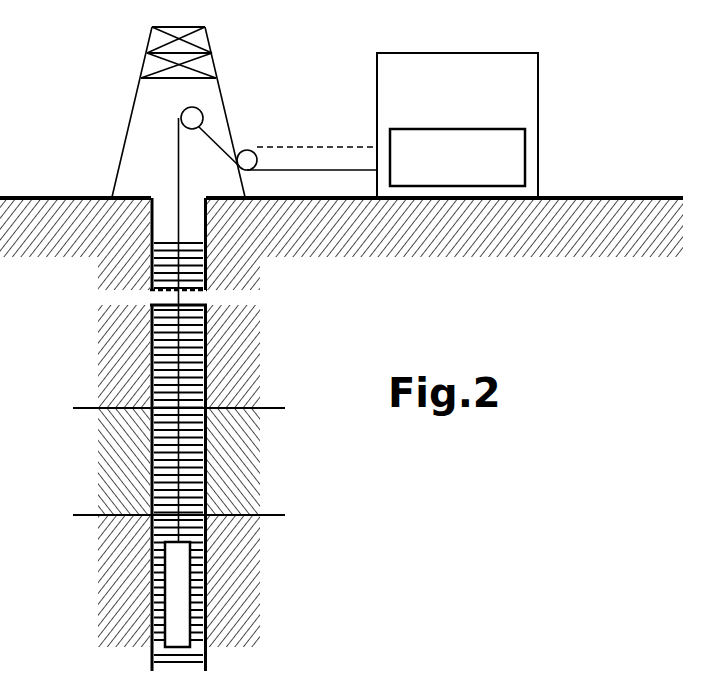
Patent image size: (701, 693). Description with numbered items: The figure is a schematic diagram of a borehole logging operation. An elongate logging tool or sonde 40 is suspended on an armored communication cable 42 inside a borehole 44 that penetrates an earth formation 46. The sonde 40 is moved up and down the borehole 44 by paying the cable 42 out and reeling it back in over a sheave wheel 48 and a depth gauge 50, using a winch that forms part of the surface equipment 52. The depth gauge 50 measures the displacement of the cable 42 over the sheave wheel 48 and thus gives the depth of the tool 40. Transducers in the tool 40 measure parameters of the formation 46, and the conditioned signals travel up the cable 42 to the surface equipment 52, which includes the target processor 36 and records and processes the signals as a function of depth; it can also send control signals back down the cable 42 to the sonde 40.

The target processor 36 is at (513, 170).
The logging tool or sonde 40 is at (178, 594).
The armored communication cable 42 is at (177, 172).
The borehole 44 is at (148, 453).
The earth formation 46 is at (123, 621).
The sheave wheel 48 is at (190, 119).
The depth gauge 50 is at (254, 155).
The surface equipment 52 is at (540, 77).